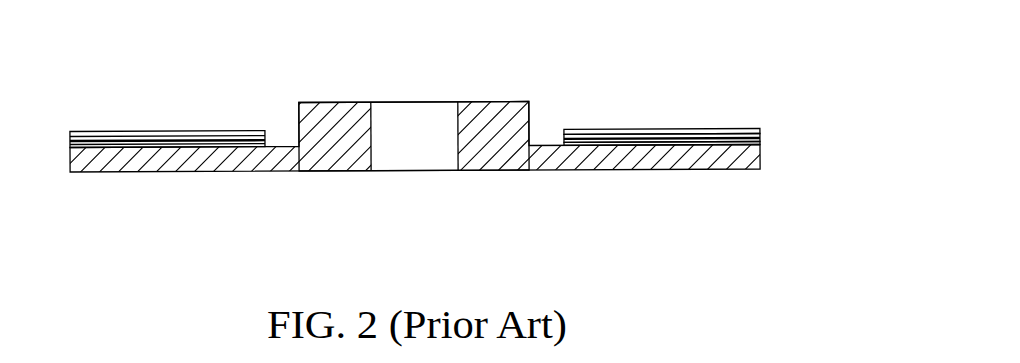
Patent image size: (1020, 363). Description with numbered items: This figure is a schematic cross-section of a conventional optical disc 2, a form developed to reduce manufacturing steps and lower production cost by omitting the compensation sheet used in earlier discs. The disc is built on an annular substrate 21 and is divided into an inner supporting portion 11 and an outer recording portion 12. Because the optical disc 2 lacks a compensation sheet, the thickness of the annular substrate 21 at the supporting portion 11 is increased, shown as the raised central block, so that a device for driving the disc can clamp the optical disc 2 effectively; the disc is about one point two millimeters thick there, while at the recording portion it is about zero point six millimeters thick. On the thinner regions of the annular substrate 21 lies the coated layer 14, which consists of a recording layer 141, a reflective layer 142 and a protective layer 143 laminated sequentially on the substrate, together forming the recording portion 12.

The optical disc 2 is at (32, 47).
The supporting portion 11 is at (530, 87).
The recording portion 12 is at (266, 88).
The coated layer 14 is at (735, 134).
The recording layer 141 is at (760, 141).
The reflective layer 142 is at (760, 137).
The protective layer 143 is at (760, 131).
The annular substrate 21 is at (653, 158).